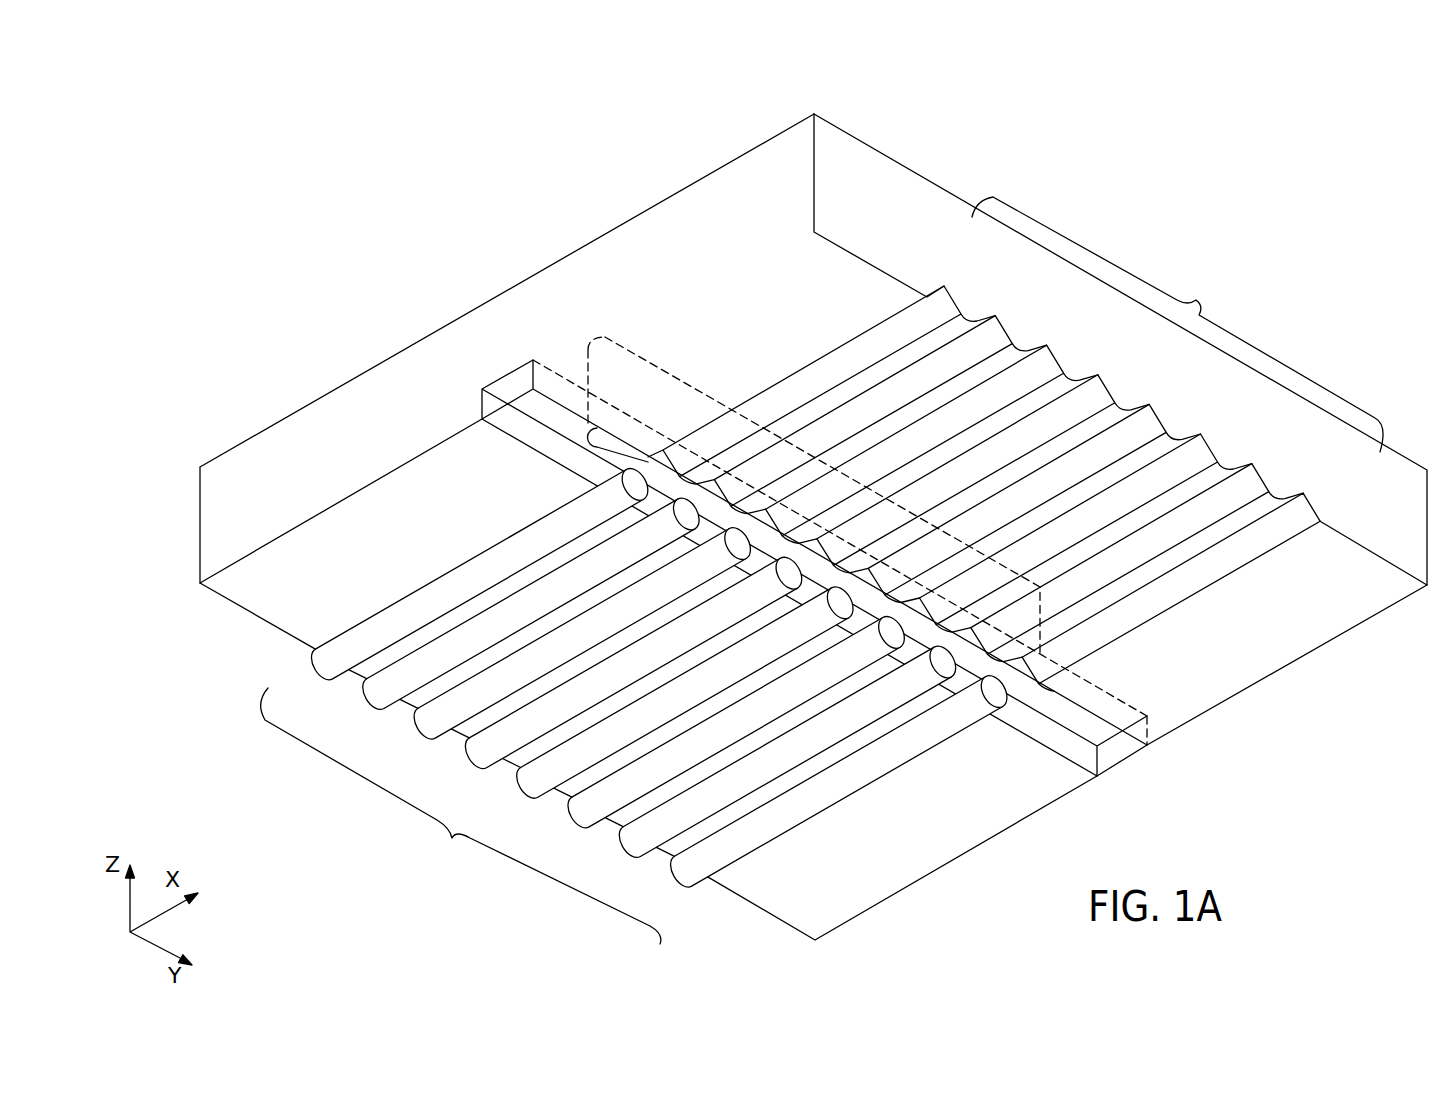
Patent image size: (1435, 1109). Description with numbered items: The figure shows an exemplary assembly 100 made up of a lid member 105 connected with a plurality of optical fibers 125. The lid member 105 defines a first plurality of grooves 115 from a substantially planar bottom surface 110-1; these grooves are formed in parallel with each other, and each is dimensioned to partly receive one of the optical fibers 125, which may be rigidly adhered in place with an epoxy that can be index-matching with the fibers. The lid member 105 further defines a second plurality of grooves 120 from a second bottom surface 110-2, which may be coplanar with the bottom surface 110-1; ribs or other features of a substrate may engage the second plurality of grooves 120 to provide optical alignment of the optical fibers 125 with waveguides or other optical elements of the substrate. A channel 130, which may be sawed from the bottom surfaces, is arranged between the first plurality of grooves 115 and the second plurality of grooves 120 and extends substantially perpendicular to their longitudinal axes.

The assembly 100 is at (340, 155).
The lid member 105 is at (813, 527).
The bottom surface 110-1 is at (372, 525).
The bottom surface 110-2 is at (1270, 652).
The first plurality of grooves 115 is at (452, 838).
The second plurality of grooves 120 is at (1196, 300).
The optical fibers 125 is at (690, 625).
The channel 130 is at (513, 392).